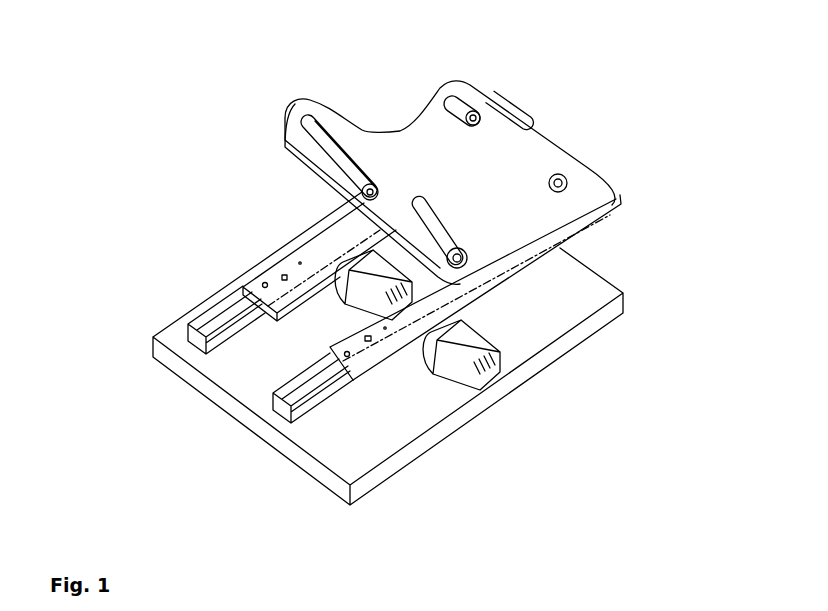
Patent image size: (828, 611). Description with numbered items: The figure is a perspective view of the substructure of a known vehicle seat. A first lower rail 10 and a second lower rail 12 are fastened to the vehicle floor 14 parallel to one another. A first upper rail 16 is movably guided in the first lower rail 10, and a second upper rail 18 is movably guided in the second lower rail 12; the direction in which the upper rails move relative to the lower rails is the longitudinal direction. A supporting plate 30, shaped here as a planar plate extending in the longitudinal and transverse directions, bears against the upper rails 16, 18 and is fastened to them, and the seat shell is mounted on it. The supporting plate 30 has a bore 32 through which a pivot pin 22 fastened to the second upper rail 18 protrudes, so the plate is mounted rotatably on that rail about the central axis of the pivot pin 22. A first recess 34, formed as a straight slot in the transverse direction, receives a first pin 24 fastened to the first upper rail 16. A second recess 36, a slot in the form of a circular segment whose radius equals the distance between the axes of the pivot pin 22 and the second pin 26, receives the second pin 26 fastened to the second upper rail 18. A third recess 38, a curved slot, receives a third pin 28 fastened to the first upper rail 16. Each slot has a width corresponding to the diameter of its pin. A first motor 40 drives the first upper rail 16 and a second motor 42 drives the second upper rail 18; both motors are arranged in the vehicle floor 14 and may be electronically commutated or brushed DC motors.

The first lower rail 10 is at (240, 300).
The second lower rail 12 is at (340, 393).
The vehicle floor 14 is at (248, 373).
The first upper rail 16 is at (307, 258).
The second upper rail 18 is at (387, 330).
The pivot pin 22 is at (580, 181).
The first pin 24 is at (474, 117).
The second pin 26 is at (503, 281).
The third pin 28 is at (371, 185).
The supporting plate 30 is at (503, 170).
The bore 32 is at (566, 180).
The first recess 34 is at (453, 108).
The second recess 36 is at (440, 238).
The third recess 38 is at (308, 138).
The first motor 40 is at (357, 277).
The second motor 42 is at (455, 355).